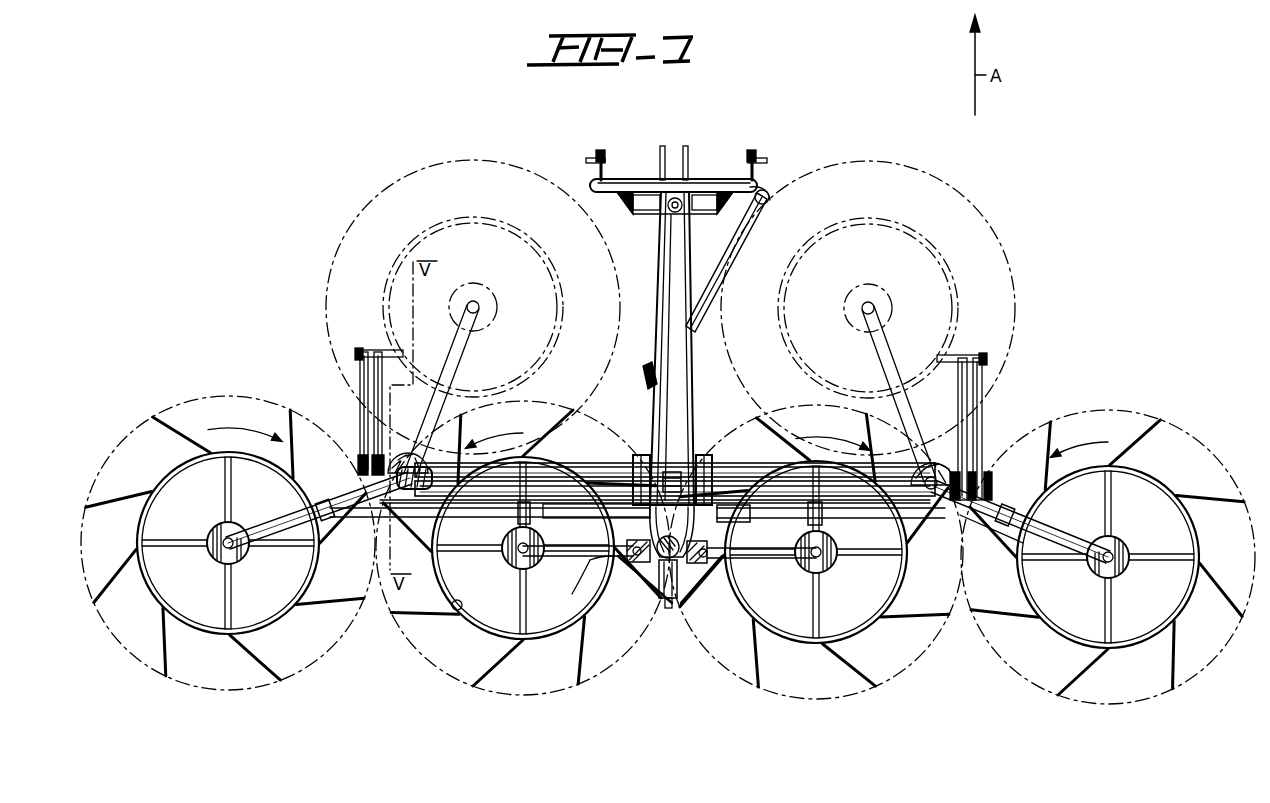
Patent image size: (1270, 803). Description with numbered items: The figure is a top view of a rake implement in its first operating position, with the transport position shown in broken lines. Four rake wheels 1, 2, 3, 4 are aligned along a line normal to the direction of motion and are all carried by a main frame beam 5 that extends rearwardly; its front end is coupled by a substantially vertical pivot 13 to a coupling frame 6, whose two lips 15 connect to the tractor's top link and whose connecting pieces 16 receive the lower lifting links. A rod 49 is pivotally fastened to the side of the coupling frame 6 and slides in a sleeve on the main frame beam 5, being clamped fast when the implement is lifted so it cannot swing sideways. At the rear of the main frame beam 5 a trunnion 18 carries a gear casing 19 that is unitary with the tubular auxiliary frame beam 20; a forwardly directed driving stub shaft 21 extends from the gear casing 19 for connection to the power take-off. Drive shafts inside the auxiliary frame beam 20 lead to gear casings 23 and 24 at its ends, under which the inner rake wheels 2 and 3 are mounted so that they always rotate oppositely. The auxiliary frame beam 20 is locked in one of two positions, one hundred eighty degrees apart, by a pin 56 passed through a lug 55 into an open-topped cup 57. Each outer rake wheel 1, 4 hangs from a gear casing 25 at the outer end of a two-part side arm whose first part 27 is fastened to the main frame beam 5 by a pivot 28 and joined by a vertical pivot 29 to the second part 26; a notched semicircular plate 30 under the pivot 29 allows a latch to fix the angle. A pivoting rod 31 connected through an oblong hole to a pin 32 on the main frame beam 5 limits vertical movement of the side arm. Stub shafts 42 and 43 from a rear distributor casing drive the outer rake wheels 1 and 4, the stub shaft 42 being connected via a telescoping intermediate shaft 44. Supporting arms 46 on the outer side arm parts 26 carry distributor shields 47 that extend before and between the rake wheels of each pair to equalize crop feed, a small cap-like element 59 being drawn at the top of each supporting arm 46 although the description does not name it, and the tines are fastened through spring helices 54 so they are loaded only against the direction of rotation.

The rake wheel 1 is at (392, 283).
The rake wheel 2 is at (523, 548).
The rake wheel 3 is at (816, 552).
The rake wheel 4 is at (948, 277).
The main frame beam 5 is at (675, 372).
The coupling frame 6 is at (715, 179).
The pivot 13 is at (667, 215).
The lips 15 is at (683, 145).
The connecting pieces 16 is at (600, 153).
The trunnion 18 is at (708, 566).
The gear casing 19 is at (641, 565).
The auxiliary frame beam 20 is at (567, 557).
The driving stub shaft 21 is at (668, 612).
The gear casing 23 is at (520, 565).
The gear casing 24 is at (818, 570).
The gear casing 25 is at (1110, 539).
The second part of side arm 26 is at (1070, 532).
The first part of side arm 27 is at (743, 470).
The pivot 28 is at (704, 455).
The pivot 29 is at (931, 477).
The semicircular plate 30 is at (953, 476).
The pivoting rod 31 is at (765, 483).
The pin 32 is at (645, 455).
The stub shaft 42 is at (803, 523).
The stub shaft 43 is at (533, 519).
The intermediate shaft 44 is at (867, 518).
The supporting arm 46 is at (363, 415).
The distributor shield 47 is at (380, 399).
The rod 49 is at (734, 242).
The spring helices 54 is at (460, 603).
The lug 55 is at (578, 585).
The pin 56 is at (623, 590).
The cup 57 is at (715, 590).
The cap 59 is at (388, 350).